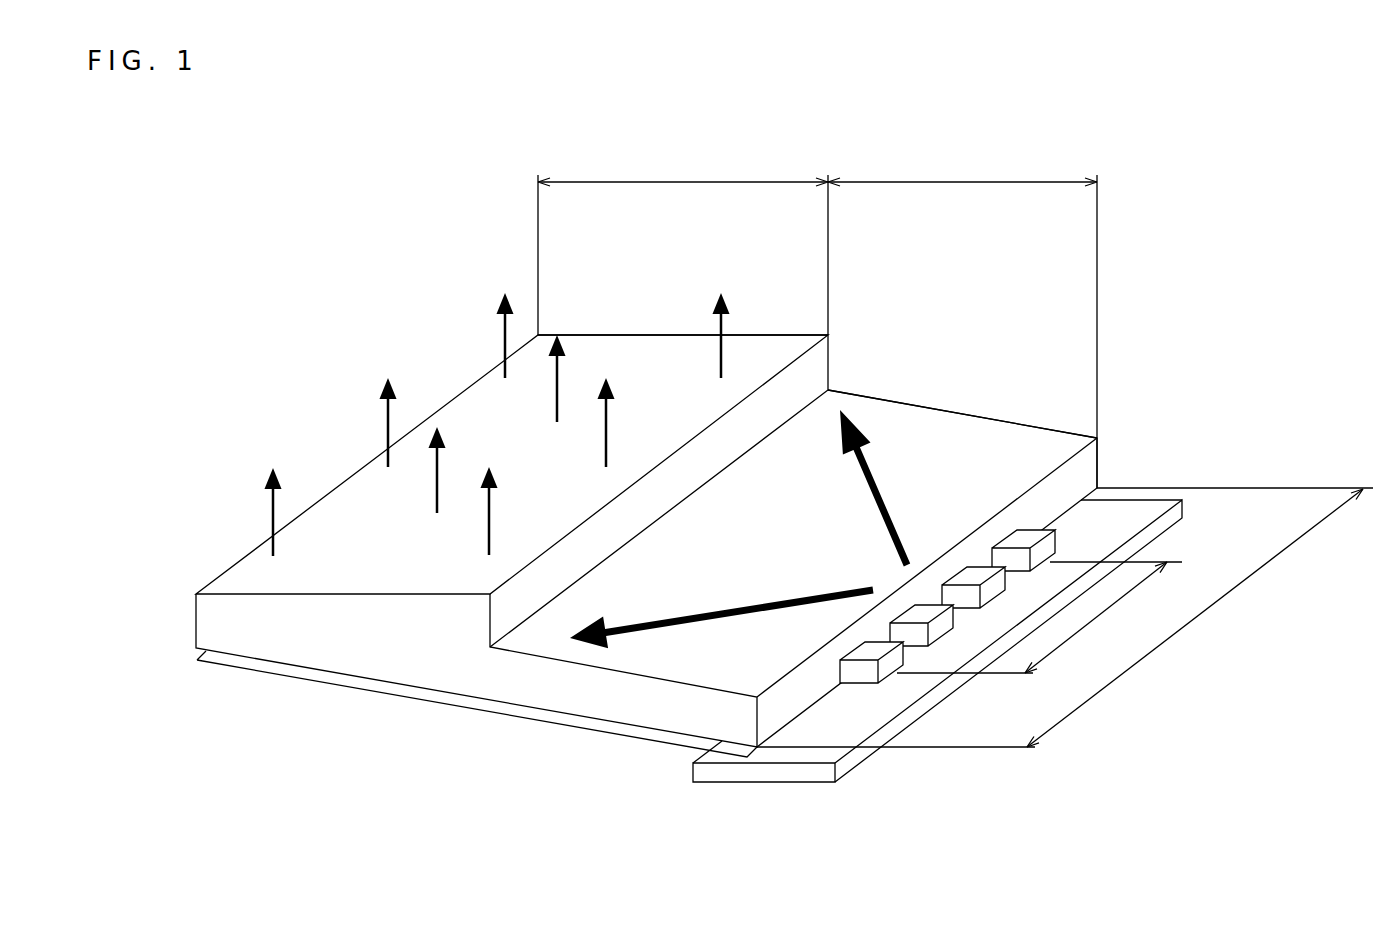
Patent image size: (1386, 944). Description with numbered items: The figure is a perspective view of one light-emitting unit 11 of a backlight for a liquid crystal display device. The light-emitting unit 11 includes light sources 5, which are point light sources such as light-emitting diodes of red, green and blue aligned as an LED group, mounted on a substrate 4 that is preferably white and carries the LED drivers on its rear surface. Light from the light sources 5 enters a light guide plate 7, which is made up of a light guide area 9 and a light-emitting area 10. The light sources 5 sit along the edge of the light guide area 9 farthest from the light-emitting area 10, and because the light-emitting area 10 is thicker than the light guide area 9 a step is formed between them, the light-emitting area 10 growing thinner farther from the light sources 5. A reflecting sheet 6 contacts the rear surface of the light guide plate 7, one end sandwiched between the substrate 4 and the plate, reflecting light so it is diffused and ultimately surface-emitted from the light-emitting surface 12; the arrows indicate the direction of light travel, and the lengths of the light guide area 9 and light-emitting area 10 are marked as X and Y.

The light-emitting unit 11 is at (243, 275).
The light-emitting surface 12 is at (477, 418).
The light-emitting area 10 is at (542, 280).
The light guide area 9 is at (1095, 427).
The light guide plate 7 is at (203, 622).
The reflecting sheet 6 is at (287, 677).
The light source 5 is at (870, 645).
The substrate 4 is at (768, 774).